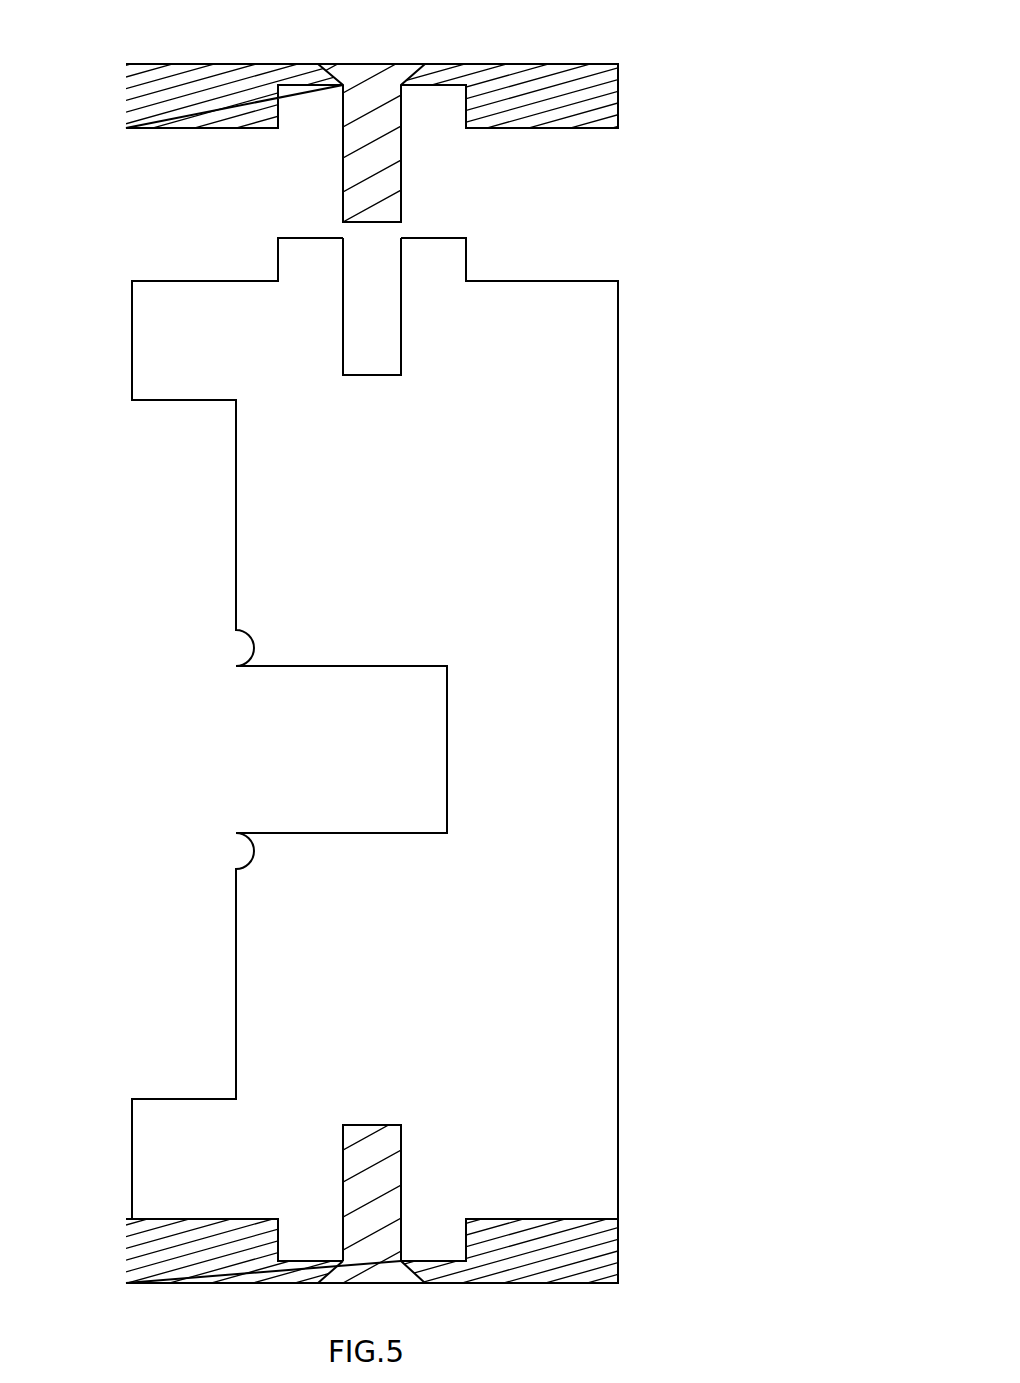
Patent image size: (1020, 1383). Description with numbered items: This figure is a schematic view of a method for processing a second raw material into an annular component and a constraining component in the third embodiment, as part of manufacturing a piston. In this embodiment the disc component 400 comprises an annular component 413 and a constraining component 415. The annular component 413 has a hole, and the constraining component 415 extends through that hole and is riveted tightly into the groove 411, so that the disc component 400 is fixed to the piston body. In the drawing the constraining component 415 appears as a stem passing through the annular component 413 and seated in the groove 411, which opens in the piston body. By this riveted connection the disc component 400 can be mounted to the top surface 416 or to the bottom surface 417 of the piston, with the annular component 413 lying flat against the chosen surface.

The disc component 400 is at (635, 78).
The groove 411 is at (388, 322).
The annular component 413 is at (610, 120).
The constraining component 415 is at (343, 153).
The top surface 416 is at (537, 280).
The bottom surface 417 is at (568, 1219).